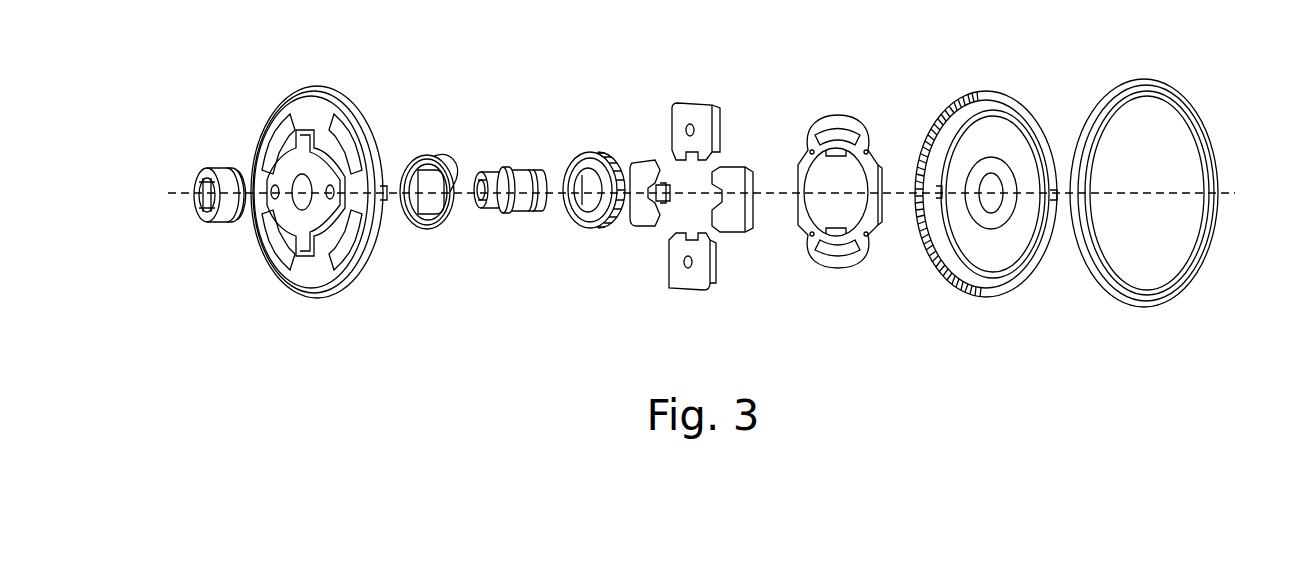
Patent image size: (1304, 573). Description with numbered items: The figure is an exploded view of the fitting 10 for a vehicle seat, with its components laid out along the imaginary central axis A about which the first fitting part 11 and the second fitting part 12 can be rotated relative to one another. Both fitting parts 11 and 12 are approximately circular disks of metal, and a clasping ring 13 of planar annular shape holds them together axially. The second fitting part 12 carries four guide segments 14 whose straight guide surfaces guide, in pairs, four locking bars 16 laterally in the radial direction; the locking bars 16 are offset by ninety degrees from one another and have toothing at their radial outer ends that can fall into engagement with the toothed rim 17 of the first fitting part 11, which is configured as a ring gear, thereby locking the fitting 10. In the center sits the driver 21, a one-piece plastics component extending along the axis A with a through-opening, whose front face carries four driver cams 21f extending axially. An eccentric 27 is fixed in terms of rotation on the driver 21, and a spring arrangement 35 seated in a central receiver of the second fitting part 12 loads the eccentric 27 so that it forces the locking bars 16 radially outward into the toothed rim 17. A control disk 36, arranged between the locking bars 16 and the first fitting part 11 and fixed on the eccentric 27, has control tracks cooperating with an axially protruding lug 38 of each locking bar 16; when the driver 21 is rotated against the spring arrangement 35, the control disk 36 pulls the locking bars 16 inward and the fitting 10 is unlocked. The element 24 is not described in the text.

The fitting 10 is at (1058, 70).
The first fitting part 11 is at (973, 195).
The second fitting part 12 is at (322, 189).
The clasping ring 13 is at (1190, 110).
The guide segments 14 is at (270, 113).
The locking bars 16 is at (703, 204).
The toothed rim 17 is at (944, 265).
The driver 21 is at (517, 193).
The driver cams 21f is at (487, 210).
The button / cap 24 is at (197, 228).
The eccentric 27 is at (588, 154).
The spring arrangement 35 is at (437, 225).
The control disk 36 is at (815, 252).
The lug 38 is at (692, 126).
The central axis A is at (1137, 195).